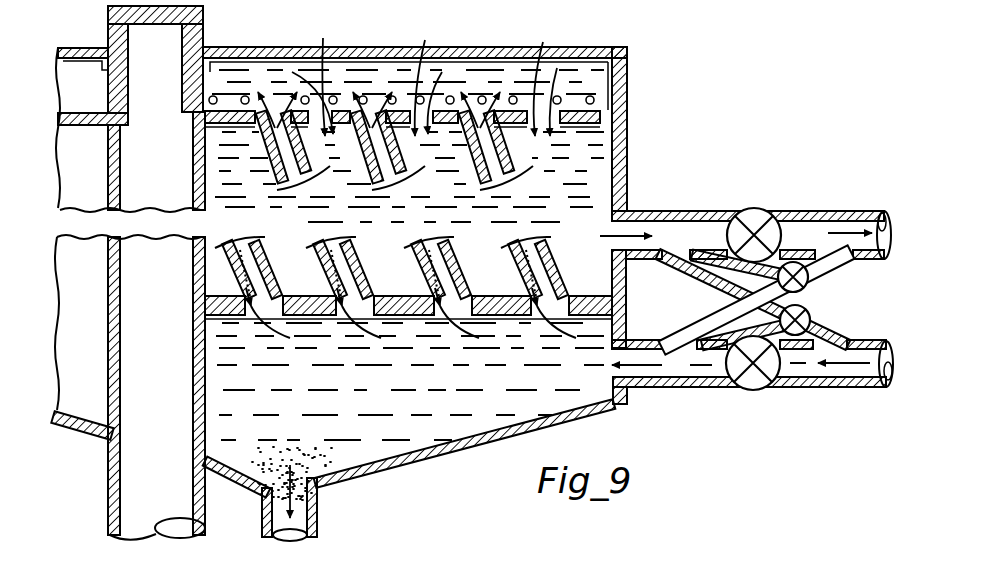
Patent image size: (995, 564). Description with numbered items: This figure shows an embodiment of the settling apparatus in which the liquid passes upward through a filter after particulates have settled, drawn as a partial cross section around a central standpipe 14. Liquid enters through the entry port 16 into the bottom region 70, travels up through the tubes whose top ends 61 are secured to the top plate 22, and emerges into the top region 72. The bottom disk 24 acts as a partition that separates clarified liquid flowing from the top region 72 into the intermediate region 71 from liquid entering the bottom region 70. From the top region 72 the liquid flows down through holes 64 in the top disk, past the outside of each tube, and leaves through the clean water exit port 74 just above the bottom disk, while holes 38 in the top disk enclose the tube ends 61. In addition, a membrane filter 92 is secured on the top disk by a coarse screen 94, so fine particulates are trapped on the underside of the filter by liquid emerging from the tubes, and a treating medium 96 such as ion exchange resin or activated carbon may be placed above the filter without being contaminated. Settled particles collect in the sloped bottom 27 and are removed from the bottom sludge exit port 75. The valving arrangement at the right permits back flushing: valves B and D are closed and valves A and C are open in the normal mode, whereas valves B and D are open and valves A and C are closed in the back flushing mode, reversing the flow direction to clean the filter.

The standpipe 14 is at (143, 194).
The entry port 16 is at (649, 388).
The top plate 22 is at (614, 142).
The bottom disk 24 is at (516, 294).
The sloped bottom wall 27 is at (436, 440).
The holes 38 is at (313, 167).
The top ends of the tubes 61 is at (372, 166).
The holes 64 is at (424, 77).
The bottom region 70 is at (391, 382).
The intermediate region 71 is at (470, 239).
The top region 72 is at (476, 64).
The exit port 74 is at (651, 214).
The bottom sludge exit port 75 is at (318, 505).
The membrane filter 92 is at (602, 117).
The coarse screen 94 is at (602, 88).
The treating medium 96 is at (382, 56).
The valve A is at (756, 208).
The valve B is at (809, 285).
The valve C is at (753, 391).
The valve D is at (811, 318).